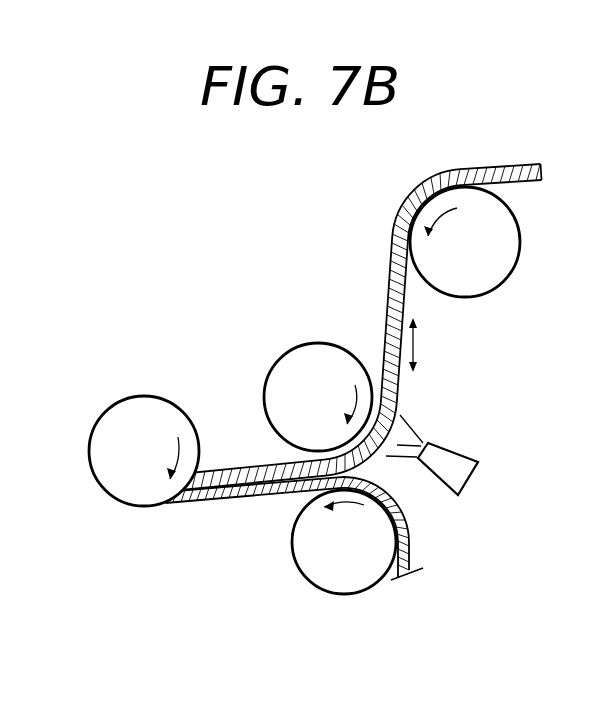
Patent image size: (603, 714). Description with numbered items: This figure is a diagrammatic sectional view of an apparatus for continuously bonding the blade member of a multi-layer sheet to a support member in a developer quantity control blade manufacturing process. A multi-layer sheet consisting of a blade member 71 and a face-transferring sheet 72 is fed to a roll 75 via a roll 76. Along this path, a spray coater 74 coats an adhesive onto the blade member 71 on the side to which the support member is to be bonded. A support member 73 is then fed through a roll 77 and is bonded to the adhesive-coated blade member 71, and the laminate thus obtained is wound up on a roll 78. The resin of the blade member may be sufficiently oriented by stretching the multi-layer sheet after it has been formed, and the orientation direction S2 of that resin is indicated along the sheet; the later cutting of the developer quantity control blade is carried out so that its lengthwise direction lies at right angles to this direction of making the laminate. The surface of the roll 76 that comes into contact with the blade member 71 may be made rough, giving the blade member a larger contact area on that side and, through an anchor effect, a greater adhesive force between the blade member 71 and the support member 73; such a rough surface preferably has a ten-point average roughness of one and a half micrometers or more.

The blade member 71 is at (398, 382).
The face-transferring sheet 72 is at (393, 262).
The support member 73 is at (245, 500).
The spray coater 74 is at (472, 478).
The roll 75 is at (280, 357).
The roll 76 is at (518, 262).
The roll 77 is at (355, 594).
The roll 78 is at (137, 397).
The orientation direction S2 is at (429, 345).